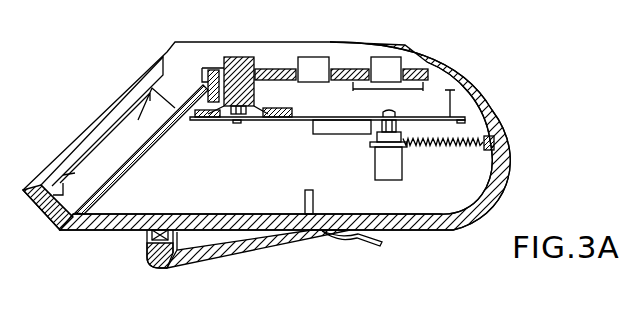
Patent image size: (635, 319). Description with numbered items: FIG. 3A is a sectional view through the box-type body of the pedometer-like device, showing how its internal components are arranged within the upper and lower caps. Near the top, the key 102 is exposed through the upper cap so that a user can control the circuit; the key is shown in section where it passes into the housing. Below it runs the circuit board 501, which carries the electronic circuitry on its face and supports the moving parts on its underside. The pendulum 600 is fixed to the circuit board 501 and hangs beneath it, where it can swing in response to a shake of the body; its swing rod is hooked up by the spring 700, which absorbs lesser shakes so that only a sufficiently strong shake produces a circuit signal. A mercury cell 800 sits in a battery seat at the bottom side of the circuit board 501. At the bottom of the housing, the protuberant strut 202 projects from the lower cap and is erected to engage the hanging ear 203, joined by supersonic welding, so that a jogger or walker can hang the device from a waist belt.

The key 102 is at (227, 72).
The circuit board 501 is at (288, 121).
The mercury cell 800 is at (347, 135).
The pendulum 600 is at (383, 181).
The spring 700 is at (457, 146).
The protuberant strut 202 is at (147, 243).
The hanging ear 203 is at (227, 254).